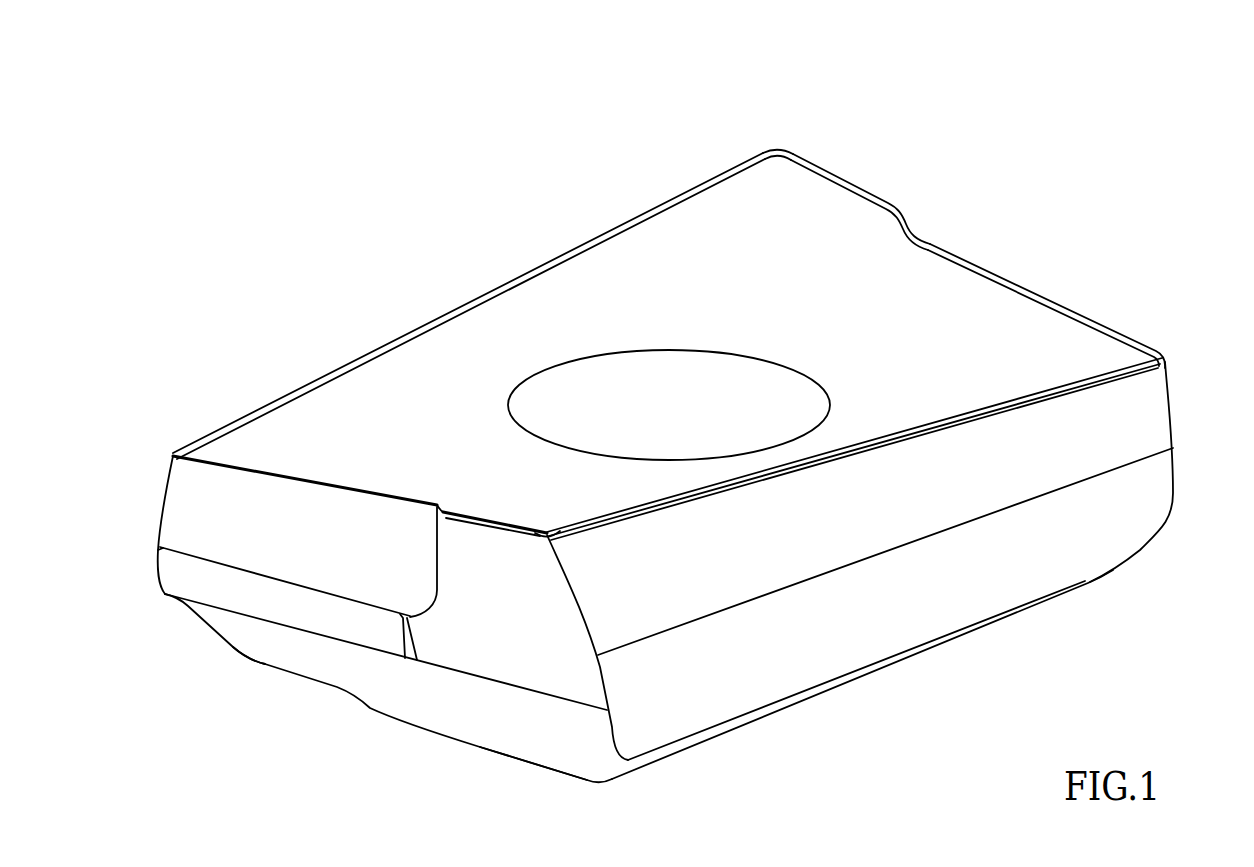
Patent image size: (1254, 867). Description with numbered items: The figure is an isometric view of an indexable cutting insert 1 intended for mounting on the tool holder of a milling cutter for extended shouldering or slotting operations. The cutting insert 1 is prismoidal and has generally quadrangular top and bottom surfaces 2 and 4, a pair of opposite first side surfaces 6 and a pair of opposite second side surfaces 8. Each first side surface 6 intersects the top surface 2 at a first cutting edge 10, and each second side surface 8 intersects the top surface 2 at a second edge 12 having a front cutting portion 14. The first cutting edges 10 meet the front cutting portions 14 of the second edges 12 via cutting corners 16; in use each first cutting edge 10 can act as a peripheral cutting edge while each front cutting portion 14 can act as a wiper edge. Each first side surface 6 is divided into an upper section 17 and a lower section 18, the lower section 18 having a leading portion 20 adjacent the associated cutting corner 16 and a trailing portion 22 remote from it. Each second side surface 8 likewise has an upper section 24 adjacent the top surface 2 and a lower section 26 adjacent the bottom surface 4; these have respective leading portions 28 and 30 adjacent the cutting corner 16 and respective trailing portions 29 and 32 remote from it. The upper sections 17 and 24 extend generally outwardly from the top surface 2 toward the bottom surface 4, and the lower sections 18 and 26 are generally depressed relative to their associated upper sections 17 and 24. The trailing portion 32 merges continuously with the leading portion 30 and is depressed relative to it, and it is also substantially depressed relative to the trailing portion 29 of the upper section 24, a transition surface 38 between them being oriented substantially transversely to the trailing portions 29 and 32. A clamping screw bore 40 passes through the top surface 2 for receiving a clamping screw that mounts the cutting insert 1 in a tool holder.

The cutting insert 1 is at (580, 173).
The top surface 2 is at (548, 297).
The bottom surface 4 is at (893, 670).
The first side surface 6 is at (302, 358).
The second side surface 8 is at (1031, 265).
The first cutting edge 10 is at (455, 311).
The second edge 12 is at (936, 238).
The front cutting portion 14 is at (852, 178).
The cutting corner 16 is at (782, 153).
The upper section 17 is at (790, 526).
The lower section 18 is at (856, 628).
The leading portion 20 is at (710, 657).
The trailing portion 22 is at (1093, 510).
The upper section 24 is at (330, 540).
The lower section 26 is at (355, 667).
The leading portion 28 is at (483, 628).
The trailing portion 29 is at (223, 527).
The leading portion 30 is at (501, 738).
The trailing portion 32 is at (247, 620).
The transition surface 38 is at (297, 603).
The clamping screw bore 40 is at (628, 421).